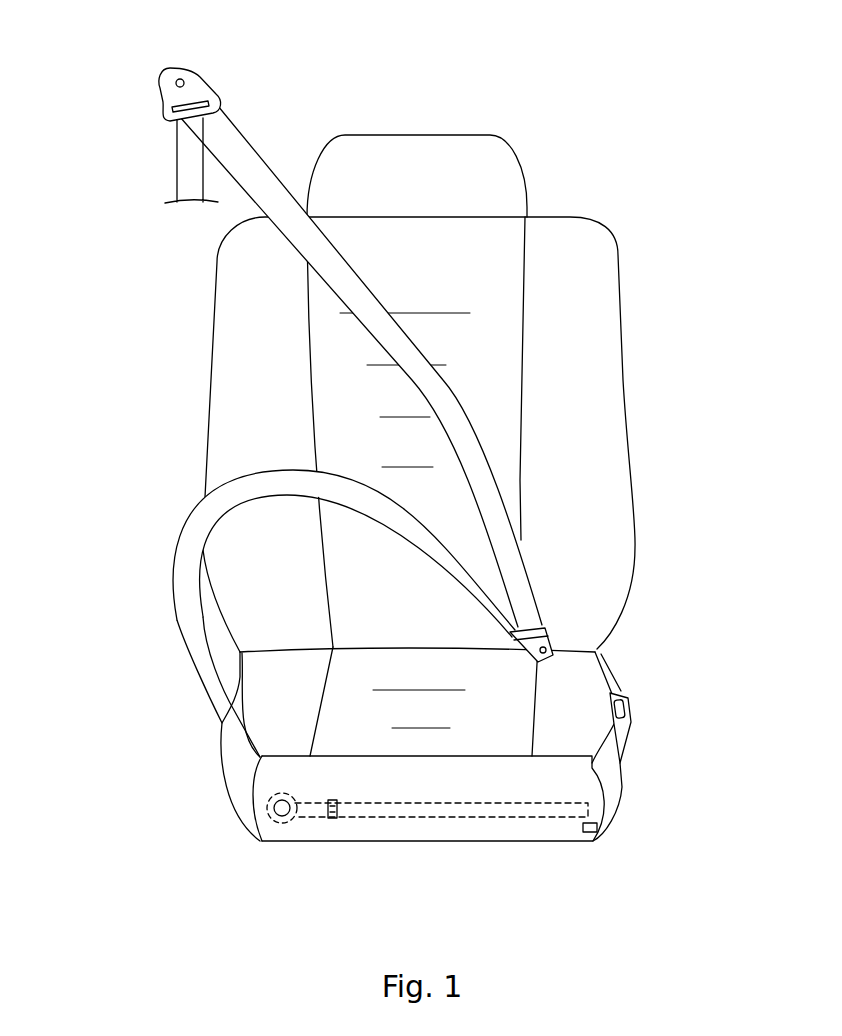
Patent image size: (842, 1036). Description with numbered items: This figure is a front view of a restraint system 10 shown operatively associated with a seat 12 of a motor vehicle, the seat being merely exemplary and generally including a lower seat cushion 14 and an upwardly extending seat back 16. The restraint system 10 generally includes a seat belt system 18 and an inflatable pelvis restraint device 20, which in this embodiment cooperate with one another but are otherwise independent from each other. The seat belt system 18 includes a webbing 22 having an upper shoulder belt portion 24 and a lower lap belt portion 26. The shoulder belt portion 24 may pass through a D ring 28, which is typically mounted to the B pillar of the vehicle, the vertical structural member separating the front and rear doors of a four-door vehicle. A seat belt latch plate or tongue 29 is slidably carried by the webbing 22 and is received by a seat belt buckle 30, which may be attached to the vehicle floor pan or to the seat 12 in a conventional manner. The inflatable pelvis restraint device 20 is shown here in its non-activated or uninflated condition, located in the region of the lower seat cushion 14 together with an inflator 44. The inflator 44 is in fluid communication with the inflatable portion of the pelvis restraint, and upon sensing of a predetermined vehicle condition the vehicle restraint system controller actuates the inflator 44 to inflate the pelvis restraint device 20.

The restraint system 10 is at (401, 473).
The seat 12 is at (458, 351).
The lower seat cushion 14 is at (613, 676).
The seat back 16 is at (622, 334).
The seat belt system 18 is at (256, 137).
The inflatable pelvis restraint device 20 is at (422, 864).
The webbing 22 is at (413, 332).
The shoulder belt portion 24 is at (333, 260).
The lap belt portion 26 is at (285, 497).
The D ring 28 is at (192, 70).
The seat belt latch plate or tongue 29 is at (550, 645).
The seat belt buckle 30 is at (630, 710).
The inflator 44 is at (283, 822).